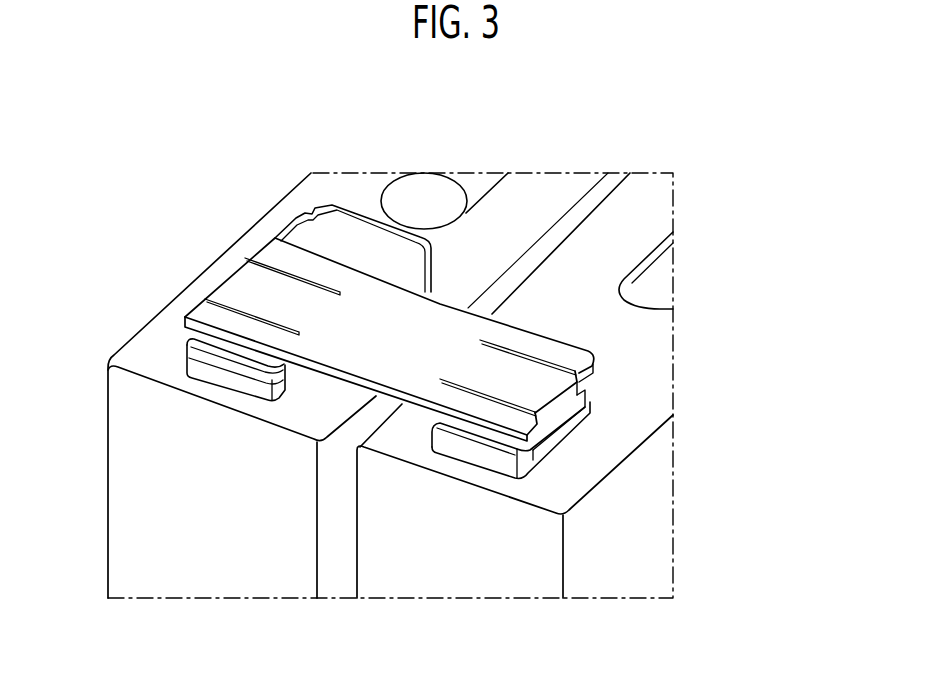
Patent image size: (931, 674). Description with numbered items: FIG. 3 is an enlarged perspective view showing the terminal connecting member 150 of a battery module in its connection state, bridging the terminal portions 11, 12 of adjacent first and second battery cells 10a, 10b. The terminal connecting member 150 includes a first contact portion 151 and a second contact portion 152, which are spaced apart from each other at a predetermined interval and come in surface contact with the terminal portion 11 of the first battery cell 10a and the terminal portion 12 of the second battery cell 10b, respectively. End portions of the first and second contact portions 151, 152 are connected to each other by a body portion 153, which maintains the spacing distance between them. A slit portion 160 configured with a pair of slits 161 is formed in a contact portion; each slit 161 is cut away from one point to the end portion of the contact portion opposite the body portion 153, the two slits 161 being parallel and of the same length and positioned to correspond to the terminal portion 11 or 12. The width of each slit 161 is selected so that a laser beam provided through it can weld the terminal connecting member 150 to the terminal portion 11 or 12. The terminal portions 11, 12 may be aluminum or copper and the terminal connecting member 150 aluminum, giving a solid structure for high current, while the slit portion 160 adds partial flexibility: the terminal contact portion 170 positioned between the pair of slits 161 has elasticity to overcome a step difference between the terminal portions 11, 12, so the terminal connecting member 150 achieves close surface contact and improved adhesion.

The first battery cell 10a is at (229, 570).
The second battery cell 10b is at (428, 570).
The terminal portion 11 is at (203, 363).
The terminal portion 12 is at (533, 433).
The terminal connecting member 150 is at (474, 188).
The first contact portion 151 is at (358, 250).
The second contact portion 152 is at (535, 316).
The body portion 153 is at (438, 323).
The slit portion 160 is at (502, 344).
The slit 161 is at (542, 338).
The terminal contact portion 170 is at (535, 378).